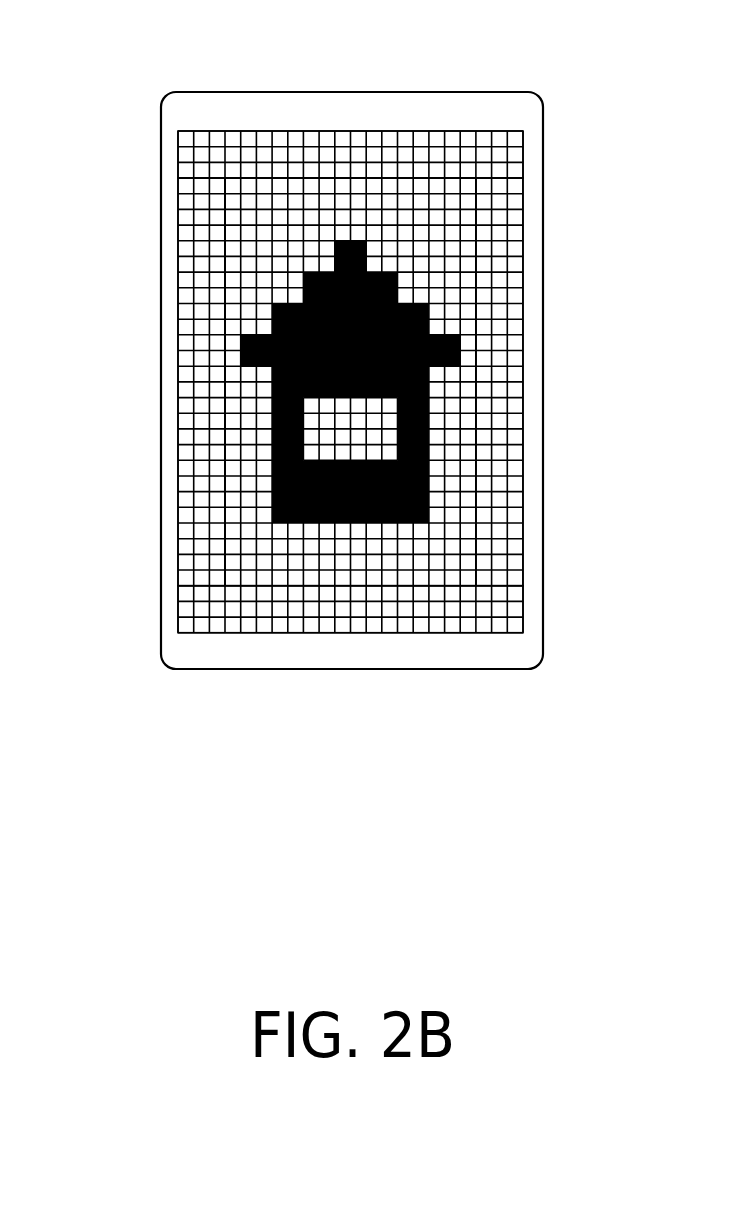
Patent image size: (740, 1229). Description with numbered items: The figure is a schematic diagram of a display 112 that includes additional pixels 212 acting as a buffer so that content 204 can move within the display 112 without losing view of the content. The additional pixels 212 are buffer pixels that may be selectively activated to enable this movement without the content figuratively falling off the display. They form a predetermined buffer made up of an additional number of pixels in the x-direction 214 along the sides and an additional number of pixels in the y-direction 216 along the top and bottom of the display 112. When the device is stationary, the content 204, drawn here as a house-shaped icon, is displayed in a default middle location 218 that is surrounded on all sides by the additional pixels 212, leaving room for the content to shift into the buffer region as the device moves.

The display 112 is at (268, 131).
The additional pixels 212 is at (175, 128).
The additional number of pixels in the x-direction 214 is at (195, 340).
The additional number of pixels in the y-direction 216 is at (382, 160).
The default middle location 218 is at (447, 238).
The content 204 is at (460, 350).